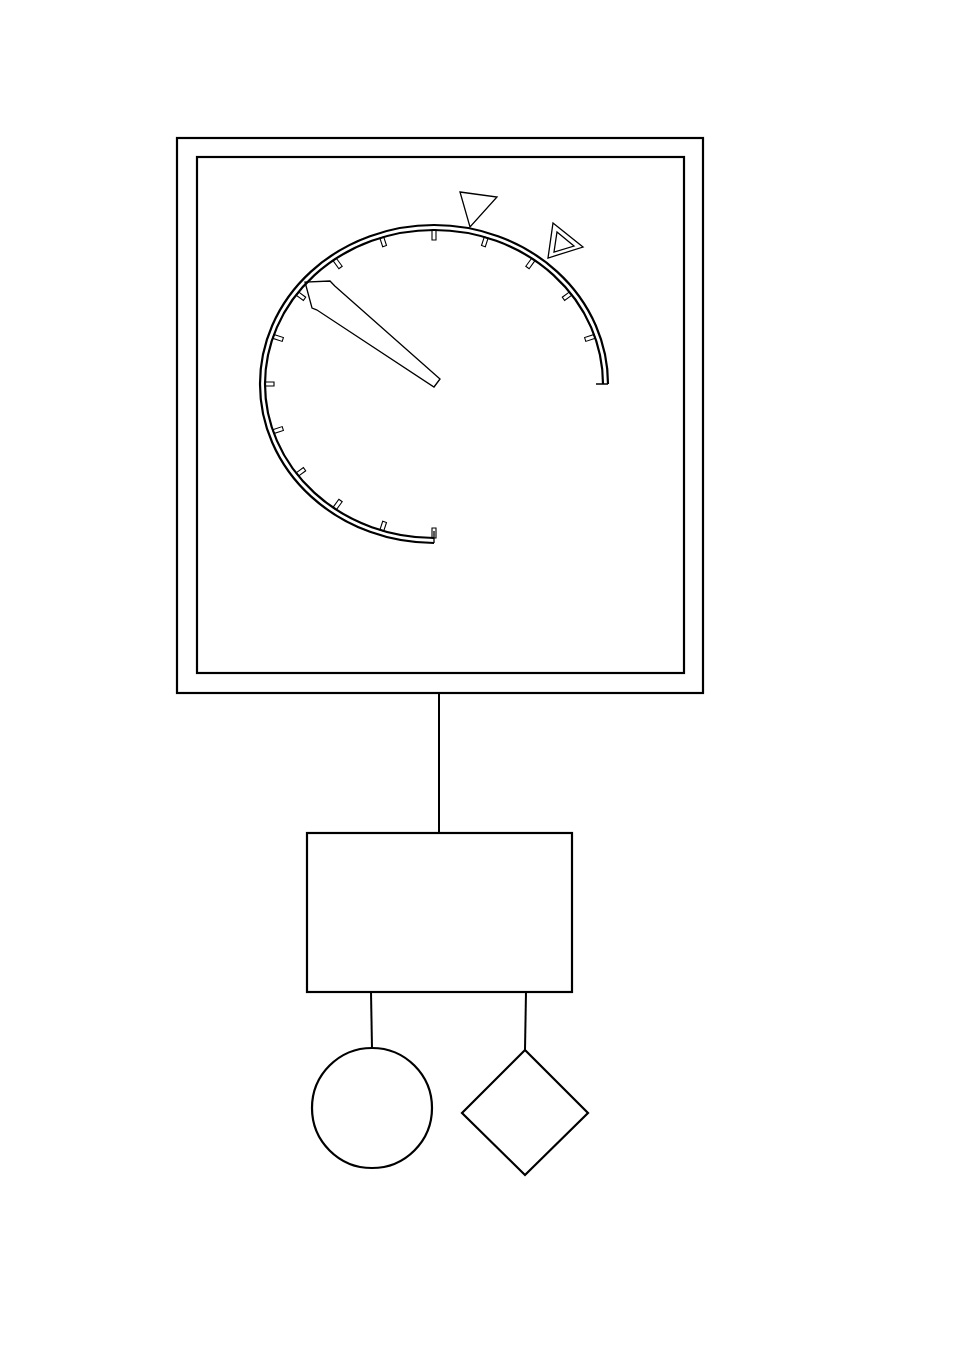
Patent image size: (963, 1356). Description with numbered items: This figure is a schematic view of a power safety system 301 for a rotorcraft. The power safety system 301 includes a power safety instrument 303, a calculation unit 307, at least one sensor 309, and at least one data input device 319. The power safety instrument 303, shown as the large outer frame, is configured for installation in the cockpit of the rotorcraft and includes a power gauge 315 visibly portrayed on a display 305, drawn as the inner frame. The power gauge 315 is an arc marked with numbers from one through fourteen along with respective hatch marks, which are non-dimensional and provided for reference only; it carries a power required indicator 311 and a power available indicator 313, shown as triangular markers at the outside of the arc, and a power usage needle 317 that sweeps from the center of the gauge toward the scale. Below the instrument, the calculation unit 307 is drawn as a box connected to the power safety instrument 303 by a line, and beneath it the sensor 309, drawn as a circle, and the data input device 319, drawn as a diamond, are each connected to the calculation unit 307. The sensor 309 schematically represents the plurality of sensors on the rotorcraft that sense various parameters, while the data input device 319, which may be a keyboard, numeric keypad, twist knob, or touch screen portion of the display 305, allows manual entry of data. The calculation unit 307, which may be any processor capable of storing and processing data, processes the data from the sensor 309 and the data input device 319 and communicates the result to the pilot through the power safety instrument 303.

The power safety system 301 is at (150, 92).
The power safety instrument 303 is at (703, 193).
The display 305 is at (684, 363).
The calculation unit 307 is at (572, 917).
The sensor 309 is at (312, 1106).
The power required indicator 311 is at (475, 190).
The power available indicator 313 is at (567, 225).
The power gauge 315 is at (248, 498).
The power usage needle 317 is at (360, 333).
The data input device 319 is at (567, 1087).